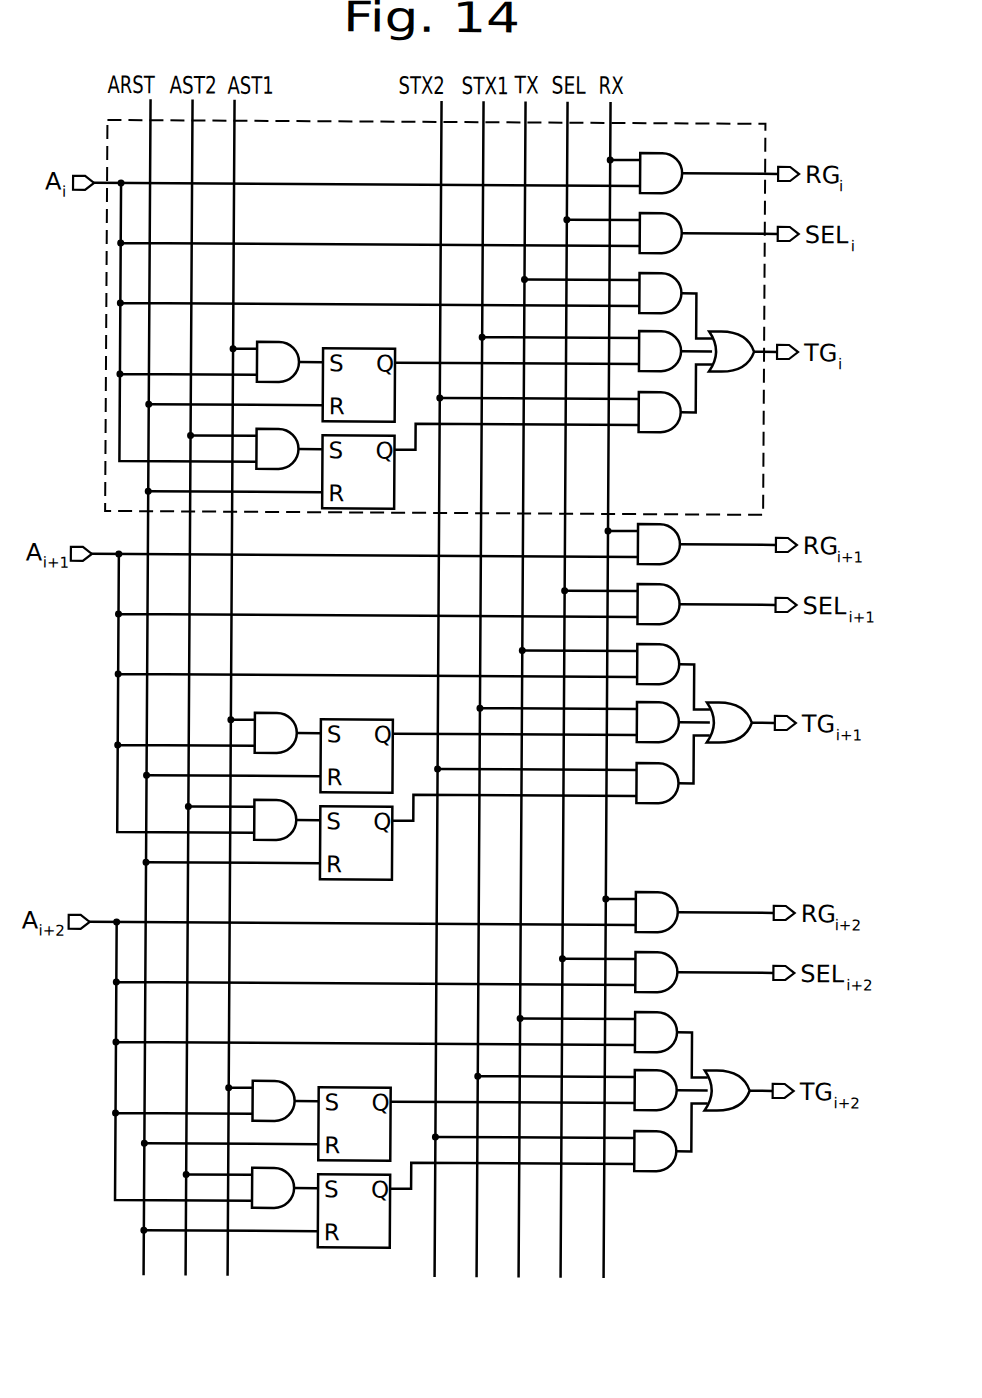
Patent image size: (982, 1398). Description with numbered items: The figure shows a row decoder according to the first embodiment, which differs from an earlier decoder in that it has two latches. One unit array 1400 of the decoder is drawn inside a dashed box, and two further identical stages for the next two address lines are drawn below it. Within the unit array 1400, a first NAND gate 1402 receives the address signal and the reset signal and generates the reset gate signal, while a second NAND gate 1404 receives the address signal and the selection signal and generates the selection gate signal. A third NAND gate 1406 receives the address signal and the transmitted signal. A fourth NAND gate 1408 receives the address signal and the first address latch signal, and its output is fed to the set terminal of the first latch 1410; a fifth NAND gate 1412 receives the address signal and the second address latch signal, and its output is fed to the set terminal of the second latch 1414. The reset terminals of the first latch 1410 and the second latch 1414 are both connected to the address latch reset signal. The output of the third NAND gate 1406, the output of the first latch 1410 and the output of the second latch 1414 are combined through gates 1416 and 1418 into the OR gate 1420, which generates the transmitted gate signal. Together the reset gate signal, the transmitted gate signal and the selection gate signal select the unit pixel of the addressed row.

The unit array 1400 is at (697, 121).
The first NAND gate 1402 is at (665, 152).
The second NAND gate 1404 is at (665, 212).
The third NAND gate 1406 is at (668, 272).
The fourth NAND gate 1408 is at (269, 343).
The first latch 1410 is at (352, 349).
The fifth NAND gate 1412 is at (269, 470).
The second latch 1414 is at (355, 509).
The AND gate (STX1 input) 1416 is at (667, 330).
The OR gate (TG output) 1418 is at (647, 432).
The OR gate 1420 is at (724, 371).